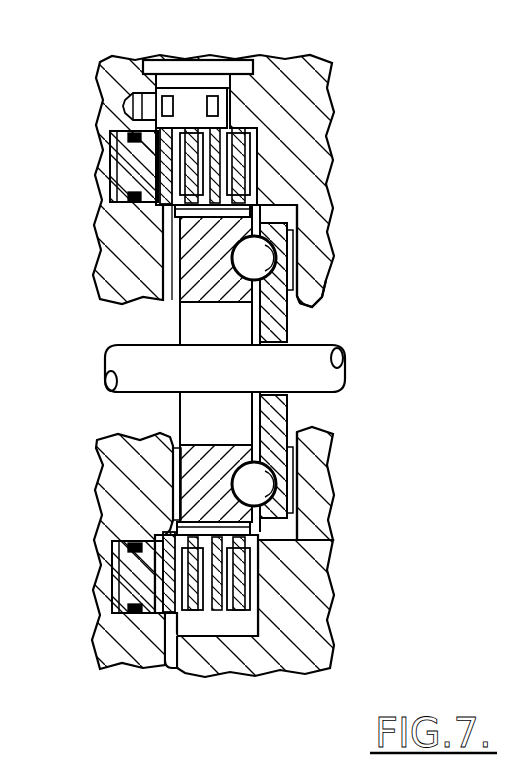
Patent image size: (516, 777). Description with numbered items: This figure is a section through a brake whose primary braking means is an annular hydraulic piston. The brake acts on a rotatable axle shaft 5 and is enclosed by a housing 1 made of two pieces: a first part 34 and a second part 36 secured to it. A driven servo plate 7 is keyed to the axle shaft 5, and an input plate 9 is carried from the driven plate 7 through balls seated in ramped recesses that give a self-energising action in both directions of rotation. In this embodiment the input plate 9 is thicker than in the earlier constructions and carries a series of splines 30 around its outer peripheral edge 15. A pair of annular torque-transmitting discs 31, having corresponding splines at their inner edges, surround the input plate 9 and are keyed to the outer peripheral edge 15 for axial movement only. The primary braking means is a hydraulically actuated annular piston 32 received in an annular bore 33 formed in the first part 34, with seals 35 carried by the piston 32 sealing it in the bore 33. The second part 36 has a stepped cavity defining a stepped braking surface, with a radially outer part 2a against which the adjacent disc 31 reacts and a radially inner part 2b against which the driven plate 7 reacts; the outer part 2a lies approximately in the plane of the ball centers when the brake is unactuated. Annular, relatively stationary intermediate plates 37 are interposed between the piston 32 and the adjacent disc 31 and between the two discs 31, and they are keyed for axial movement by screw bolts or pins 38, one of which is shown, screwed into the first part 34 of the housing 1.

The housing 1 is at (314, 676).
The radially outer part of the braking surface 2a is at (248, 80).
The radially inner part of the braking surface 2b is at (306, 303).
The axle shaft 5 is at (130, 357).
The driven servo plate 7 is at (278, 415).
The input plate 9 is at (188, 287).
The outer peripheral edge 15 is at (245, 197).
The splines 30 is at (168, 234).
The torque-transmitting discs 31 is at (187, 130).
The annular piston 32 is at (128, 137).
The annular bore 33 is at (112, 170).
The first part of the housing 34 is at (115, 495).
The seals 35 is at (152, 509).
The second part of the housing 36 is at (312, 541).
The intermediate plate 37 is at (215, 614).
The screw bolts or pins 38 is at (196, 74).